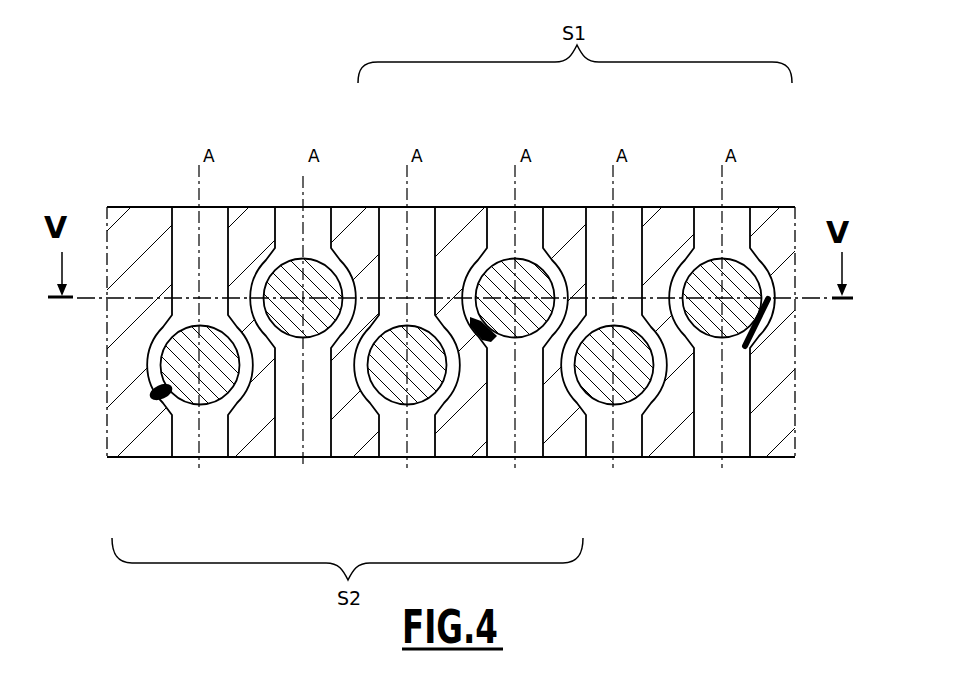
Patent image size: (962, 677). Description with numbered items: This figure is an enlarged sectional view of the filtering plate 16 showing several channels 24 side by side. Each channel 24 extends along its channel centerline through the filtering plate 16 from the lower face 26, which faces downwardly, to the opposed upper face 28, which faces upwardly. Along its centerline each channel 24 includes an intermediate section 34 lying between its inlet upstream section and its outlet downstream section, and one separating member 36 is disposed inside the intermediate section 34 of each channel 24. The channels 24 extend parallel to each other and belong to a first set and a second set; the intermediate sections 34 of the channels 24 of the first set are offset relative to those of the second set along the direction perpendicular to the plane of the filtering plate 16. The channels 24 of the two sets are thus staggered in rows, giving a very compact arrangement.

The filtering plate 16 is at (777, 223).
The channel 24 is at (317, 217).
The lower face 26 is at (775, 457).
The upper face 28 is at (667, 212).
The intermediate section 34 is at (268, 262).
The separating member 36 is at (300, 268).